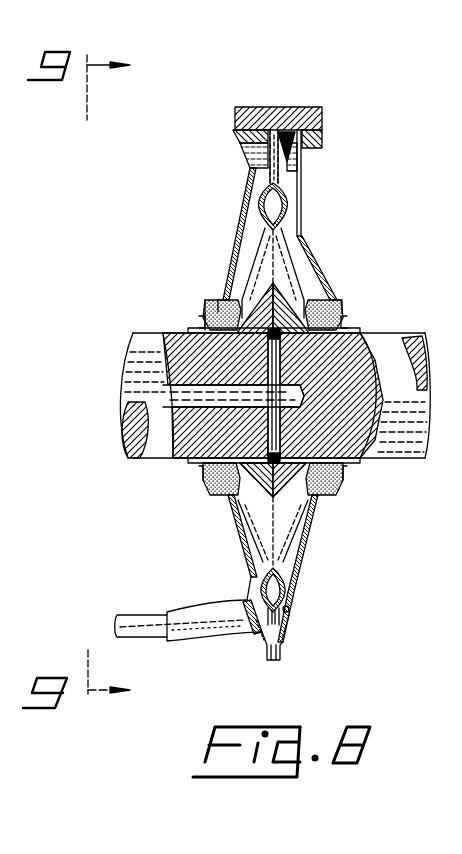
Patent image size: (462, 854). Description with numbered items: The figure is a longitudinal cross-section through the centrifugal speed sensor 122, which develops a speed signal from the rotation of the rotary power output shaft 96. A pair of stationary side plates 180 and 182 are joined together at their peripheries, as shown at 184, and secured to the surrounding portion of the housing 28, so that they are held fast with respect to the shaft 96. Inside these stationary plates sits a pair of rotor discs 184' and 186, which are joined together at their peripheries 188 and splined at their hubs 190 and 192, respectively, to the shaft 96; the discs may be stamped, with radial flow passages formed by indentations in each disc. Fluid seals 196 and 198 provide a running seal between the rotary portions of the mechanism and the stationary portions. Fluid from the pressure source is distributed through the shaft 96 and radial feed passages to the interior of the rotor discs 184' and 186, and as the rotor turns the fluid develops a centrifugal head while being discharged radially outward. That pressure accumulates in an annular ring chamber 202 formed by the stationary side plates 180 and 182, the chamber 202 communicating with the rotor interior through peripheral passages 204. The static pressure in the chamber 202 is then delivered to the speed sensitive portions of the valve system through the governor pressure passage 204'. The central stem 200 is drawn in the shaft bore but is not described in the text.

The housing 28 is at (276, 108).
The rotor disc 184 is at (307, 138).
The rotor disc periphery joint 188 is at (267, 176).
The side plate 182 is at (252, 210).
The side plate 180 is at (299, 230).
The rotor disc 186 is at (287, 250).
The speed sensor 122 is at (314, 265).
The rotor disc 184' is at (232, 280).
The fluid seal 196 is at (220, 300).
The fluid seal 198 is at (331, 307).
The rotary power output shaft 96 is at (277, 406).
The hub 190 is at (224, 330).
The hub 192 is at (327, 330).
The central stem 200 is at (274, 425).
The peripheral passage 204 is at (301, 561).
The annular ring chamber 202 is at (288, 617).
The governor pressure passage 204' is at (188, 599).